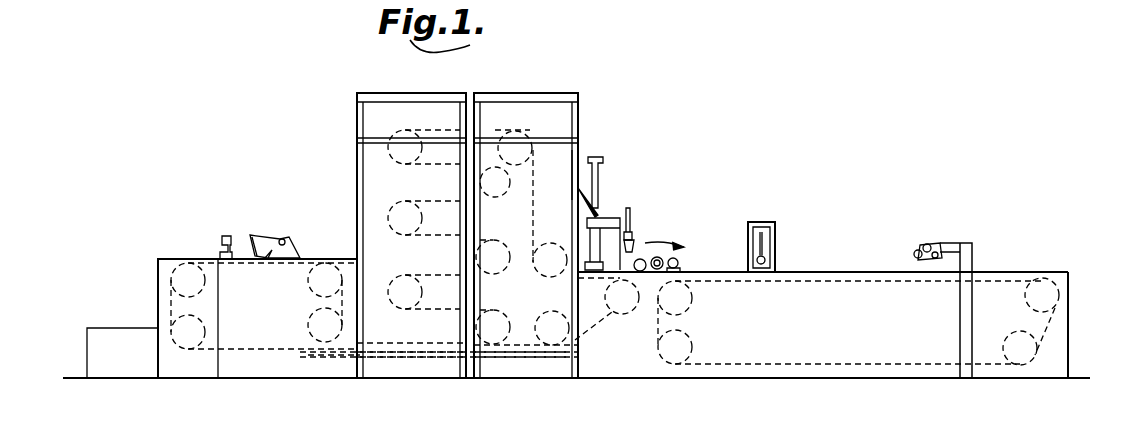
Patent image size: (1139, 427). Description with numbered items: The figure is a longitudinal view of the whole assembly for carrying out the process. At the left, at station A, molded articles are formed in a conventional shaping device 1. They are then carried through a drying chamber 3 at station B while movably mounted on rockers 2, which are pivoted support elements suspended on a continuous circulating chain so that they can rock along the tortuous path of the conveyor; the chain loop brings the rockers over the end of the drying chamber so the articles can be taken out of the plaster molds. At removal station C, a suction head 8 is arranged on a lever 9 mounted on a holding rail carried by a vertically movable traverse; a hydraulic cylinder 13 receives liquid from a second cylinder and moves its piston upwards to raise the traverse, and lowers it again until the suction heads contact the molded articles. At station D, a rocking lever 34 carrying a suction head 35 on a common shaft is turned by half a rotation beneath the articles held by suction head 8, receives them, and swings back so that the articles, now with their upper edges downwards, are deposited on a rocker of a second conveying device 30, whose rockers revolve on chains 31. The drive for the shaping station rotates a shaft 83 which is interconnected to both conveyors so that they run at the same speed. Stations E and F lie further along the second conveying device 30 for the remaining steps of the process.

The shaping device 1 is at (255, 232).
The rockers 2 is at (490, 128).
The drying chamber 3 is at (572, 157).
The hydraulic cylinder 13 is at (602, 175).
The lever 9 is at (610, 220).
The suction head 8 is at (637, 238).
The rocking lever 34 is at (668, 262).
The suction head 35 is at (683, 264).
The second conveying device 30 is at (840, 290).
The chains 31 is at (995, 282).
The shaft 83 is at (405, 357).
The station A is at (259, 259).
The station B is at (467, 216).
The removal station C is at (823, 190).
The station D is at (664, 234).
The station E is at (761, 232).
The station F is at (943, 294).